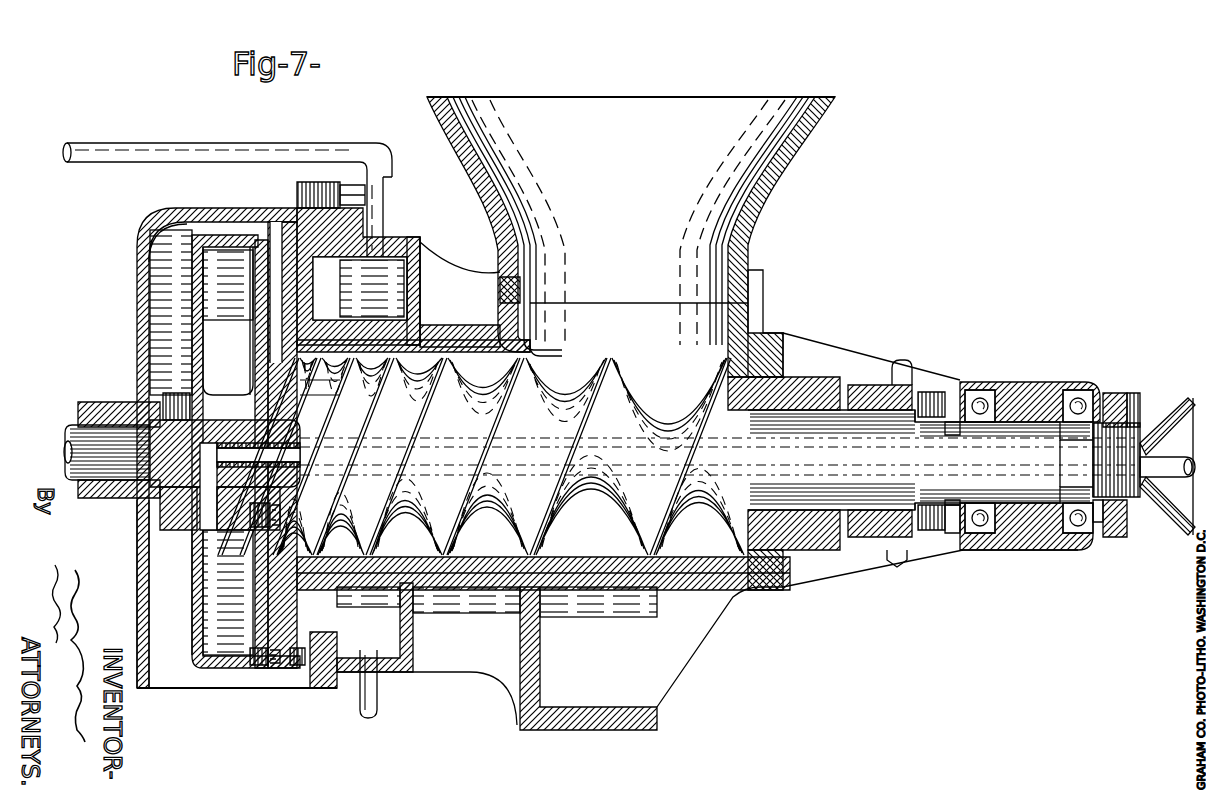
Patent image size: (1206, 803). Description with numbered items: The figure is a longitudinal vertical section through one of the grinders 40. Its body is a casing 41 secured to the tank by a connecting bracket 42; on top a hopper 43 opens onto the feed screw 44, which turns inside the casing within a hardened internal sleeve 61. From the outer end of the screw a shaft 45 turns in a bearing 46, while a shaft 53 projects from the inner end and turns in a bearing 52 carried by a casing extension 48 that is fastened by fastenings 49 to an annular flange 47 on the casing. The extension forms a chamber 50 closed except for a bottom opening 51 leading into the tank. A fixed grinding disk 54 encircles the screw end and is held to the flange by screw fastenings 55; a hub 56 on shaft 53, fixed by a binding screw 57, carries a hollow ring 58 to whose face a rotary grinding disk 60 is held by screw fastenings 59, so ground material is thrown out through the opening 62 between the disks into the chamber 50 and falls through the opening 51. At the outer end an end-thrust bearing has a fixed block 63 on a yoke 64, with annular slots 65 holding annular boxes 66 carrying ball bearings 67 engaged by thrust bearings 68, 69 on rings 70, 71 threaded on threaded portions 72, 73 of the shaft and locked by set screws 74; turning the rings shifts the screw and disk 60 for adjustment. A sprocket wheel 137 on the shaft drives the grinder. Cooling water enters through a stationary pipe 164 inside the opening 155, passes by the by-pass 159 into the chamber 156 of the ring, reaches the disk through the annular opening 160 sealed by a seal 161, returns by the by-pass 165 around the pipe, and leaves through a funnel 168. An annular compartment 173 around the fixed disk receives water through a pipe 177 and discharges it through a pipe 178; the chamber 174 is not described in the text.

The grinder 40 is at (873, 449).
The casing 41 is at (768, 312).
The connecting bracket 42 is at (525, 672).
The hopper 43 is at (812, 146).
The feed screw 44 is at (679, 456).
The shaft 45 is at (920, 460).
The bearing 46 is at (812, 390).
The annular flange 47 is at (358, 276).
The casing extension 48 is at (137, 266).
The fastenings 49 is at (333, 199).
The chamber 50 is at (192, 322).
The opening 51 is at (218, 680).
The bearing 52 is at (112, 490).
The shaft 53 is at (70, 446).
The grinding disk 54 is at (297, 668).
The screw fastenings 55 is at (320, 690).
The hub 56 is at (160, 512).
The binding screw 57 is at (178, 393).
The hollow ring 58 is at (185, 245).
The screw fastenings 59 is at (259, 668).
The grinding disk 60 is at (270, 586).
The internal sleeve 61 is at (451, 318).
The opening 62 is at (287, 345).
The fixed block 63 is at (1030, 551).
The yoke 64 is at (923, 380).
The annular slots 65 is at (1000, 395).
The annular box 66 is at (1063, 398).
The ball bearings 67 is at (980, 535).
The annular thrust bearing 68 is at (958, 396).
The annular thrust bearing 69 is at (1113, 393).
The ring 70 is at (945, 532).
The ring 71 is at (1118, 532).
The threaded portion 72 is at (931, 505).
The threaded portion 73 is at (1126, 445).
The set screw 74 is at (938, 392).
The sprocket wheel 137 is at (897, 556).
The opening 155 is at (300, 400).
The chamber 156 is at (228, 592).
The by-pass 159 is at (190, 538).
The annular opening 160 is at (245, 290).
The seal 161 is at (268, 285).
The pipe 164 is at (300, 433).
The by-pass 165 is at (243, 375).
The funnel 168 is at (1178, 518).
The annular compartment 173 is at (412, 250).
The chamber 174 is at (360, 288).
The pipe 177 is at (312, 150).
The pipe 178 is at (375, 716).